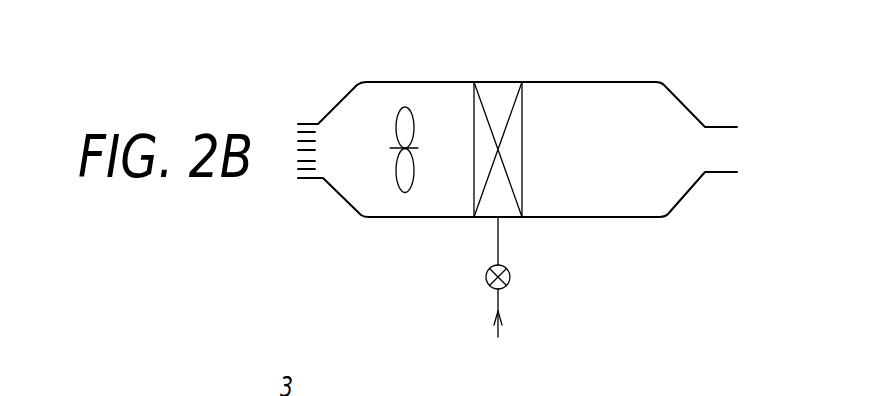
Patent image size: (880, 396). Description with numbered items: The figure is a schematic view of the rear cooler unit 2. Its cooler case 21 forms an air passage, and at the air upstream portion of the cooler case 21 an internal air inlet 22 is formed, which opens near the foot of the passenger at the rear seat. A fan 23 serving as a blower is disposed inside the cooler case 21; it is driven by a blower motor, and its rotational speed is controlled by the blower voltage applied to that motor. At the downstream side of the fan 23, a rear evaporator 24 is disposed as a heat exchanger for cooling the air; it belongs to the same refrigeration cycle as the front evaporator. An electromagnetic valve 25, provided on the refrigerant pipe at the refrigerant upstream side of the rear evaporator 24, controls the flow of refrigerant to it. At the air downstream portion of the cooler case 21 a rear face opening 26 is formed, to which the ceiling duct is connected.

The rear cooler unit 2 is at (330, 88).
The cooler case 21 is at (582, 83).
The internal air inlet 22 is at (298, 148).
The fan 23 is at (407, 107).
The rear evaporator 24 is at (502, 90).
The electromagnetic valve 25 is at (470, 277).
The rear face opening 26 is at (733, 148).